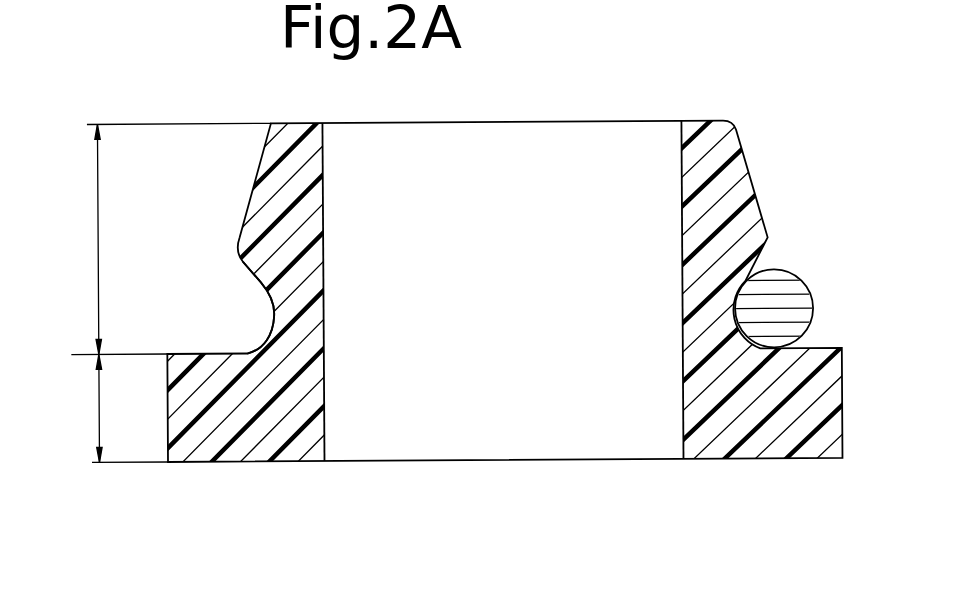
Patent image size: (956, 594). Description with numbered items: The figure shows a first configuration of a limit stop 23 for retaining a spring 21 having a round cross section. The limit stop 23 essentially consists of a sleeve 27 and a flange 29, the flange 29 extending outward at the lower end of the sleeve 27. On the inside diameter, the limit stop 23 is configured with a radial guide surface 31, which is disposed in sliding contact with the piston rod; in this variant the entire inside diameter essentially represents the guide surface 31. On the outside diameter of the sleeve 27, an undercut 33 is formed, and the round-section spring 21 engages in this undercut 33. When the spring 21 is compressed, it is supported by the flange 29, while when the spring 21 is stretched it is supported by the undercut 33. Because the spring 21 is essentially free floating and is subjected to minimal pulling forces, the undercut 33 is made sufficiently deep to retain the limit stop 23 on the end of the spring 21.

The spring 21 is at (799, 304).
The limit stop 23 is at (500, 474).
The sleeve 27 is at (165, 238).
The flange 29 is at (114, 408).
The radial guide surface 31 is at (331, 415).
The undercut 33 is at (250, 322).